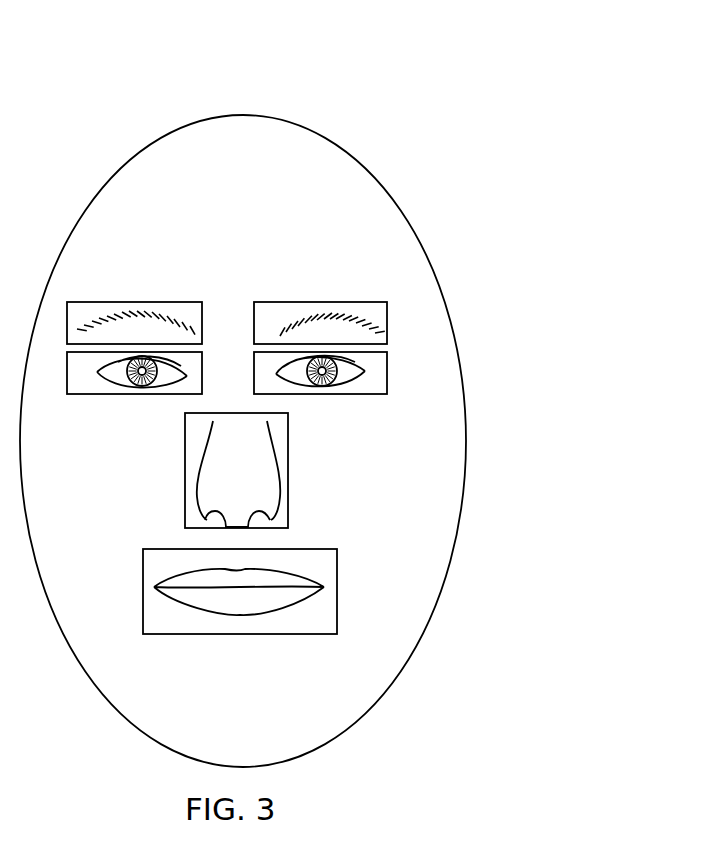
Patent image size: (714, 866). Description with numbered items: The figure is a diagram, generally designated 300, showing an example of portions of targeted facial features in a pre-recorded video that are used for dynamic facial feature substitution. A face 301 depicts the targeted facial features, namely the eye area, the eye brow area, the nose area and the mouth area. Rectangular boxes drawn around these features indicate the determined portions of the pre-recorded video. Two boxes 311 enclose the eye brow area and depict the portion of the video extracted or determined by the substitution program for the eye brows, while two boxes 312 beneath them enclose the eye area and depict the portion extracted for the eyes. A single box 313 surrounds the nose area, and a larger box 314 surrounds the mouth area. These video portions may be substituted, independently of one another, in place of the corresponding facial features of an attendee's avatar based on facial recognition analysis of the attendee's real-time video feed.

The diagram 300 is at (506, 59).
The face 301 is at (363, 163).
The boxes 311 is at (387, 307).
The boxes 312 is at (387, 368).
The box 313 is at (288, 465).
The box 314 is at (337, 589).